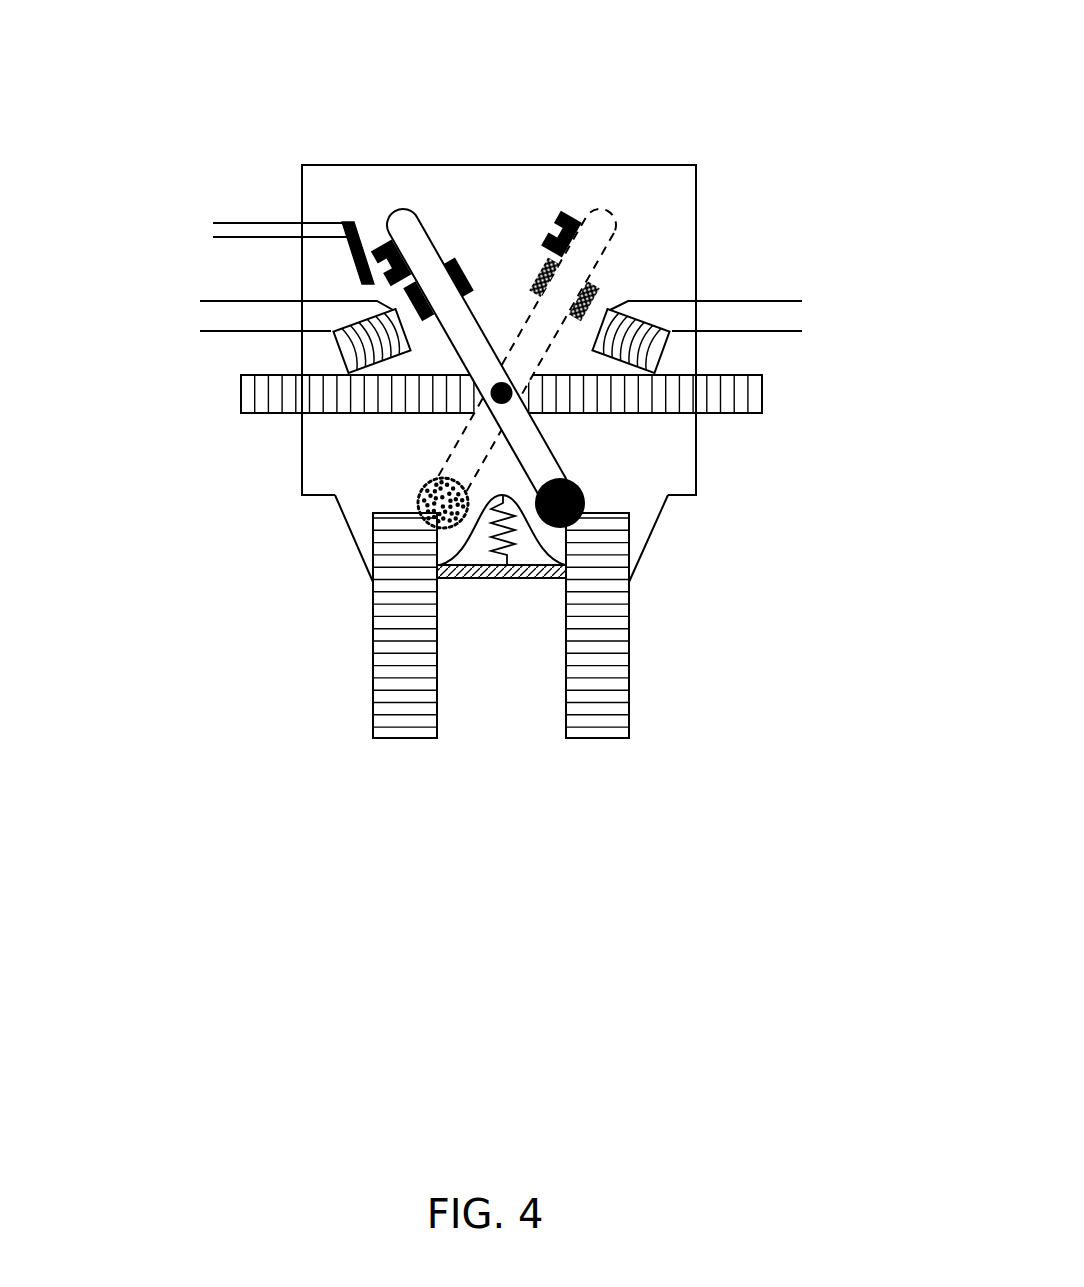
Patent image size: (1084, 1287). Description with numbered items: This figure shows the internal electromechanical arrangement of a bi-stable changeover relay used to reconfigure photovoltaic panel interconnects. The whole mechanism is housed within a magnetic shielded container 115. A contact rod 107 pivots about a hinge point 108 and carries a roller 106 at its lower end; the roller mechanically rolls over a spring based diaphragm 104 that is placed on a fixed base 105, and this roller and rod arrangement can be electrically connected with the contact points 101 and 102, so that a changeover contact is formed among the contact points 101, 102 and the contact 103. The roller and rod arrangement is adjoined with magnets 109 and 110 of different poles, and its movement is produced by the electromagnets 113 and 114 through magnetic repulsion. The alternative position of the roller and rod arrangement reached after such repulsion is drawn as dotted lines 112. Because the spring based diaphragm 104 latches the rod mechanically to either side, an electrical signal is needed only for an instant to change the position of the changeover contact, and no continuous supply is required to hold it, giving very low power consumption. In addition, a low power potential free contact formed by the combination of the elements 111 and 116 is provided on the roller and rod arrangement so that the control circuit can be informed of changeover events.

The contact point 101 is at (405, 739).
The contact point 102 is at (597, 739).
The contact 103 is at (761, 394).
The spring based diaphragm 104 is at (495, 547).
The fixed base 105 is at (507, 579).
The roller 106 is at (588, 498).
The contact rod 107 is at (572, 470).
The hinge point 108 is at (506, 406).
The magnet 109 is at (430, 323).
The magnet 110 is at (457, 257).
The potential free contact 111 is at (367, 250).
The alternative position 112 is at (600, 257).
The electromagnet 113 is at (208, 315).
The electromagnet 114 is at (790, 322).
The magnetic shielded container 115 is at (498, 165).
The potential free contact 116 is at (377, 248).